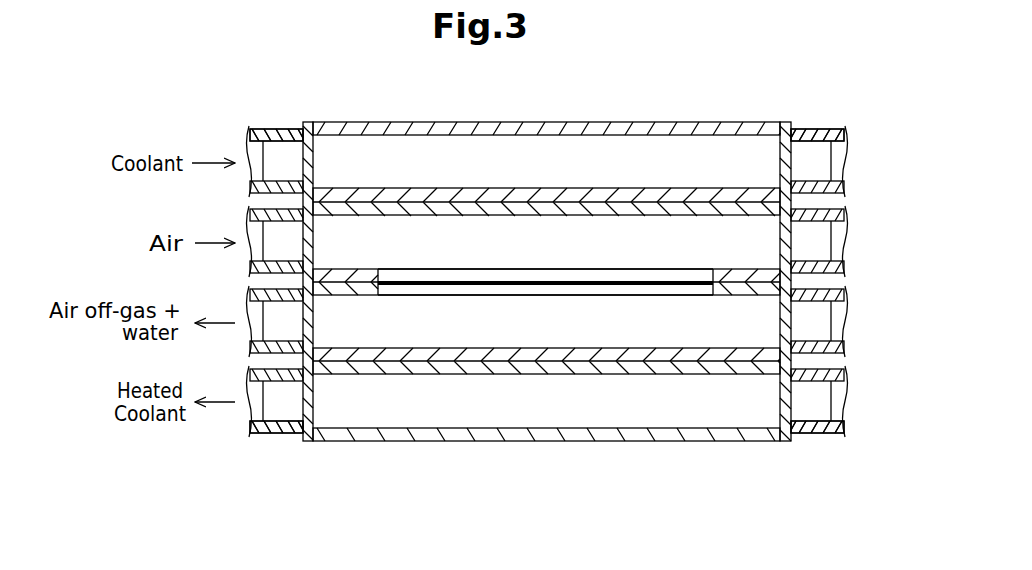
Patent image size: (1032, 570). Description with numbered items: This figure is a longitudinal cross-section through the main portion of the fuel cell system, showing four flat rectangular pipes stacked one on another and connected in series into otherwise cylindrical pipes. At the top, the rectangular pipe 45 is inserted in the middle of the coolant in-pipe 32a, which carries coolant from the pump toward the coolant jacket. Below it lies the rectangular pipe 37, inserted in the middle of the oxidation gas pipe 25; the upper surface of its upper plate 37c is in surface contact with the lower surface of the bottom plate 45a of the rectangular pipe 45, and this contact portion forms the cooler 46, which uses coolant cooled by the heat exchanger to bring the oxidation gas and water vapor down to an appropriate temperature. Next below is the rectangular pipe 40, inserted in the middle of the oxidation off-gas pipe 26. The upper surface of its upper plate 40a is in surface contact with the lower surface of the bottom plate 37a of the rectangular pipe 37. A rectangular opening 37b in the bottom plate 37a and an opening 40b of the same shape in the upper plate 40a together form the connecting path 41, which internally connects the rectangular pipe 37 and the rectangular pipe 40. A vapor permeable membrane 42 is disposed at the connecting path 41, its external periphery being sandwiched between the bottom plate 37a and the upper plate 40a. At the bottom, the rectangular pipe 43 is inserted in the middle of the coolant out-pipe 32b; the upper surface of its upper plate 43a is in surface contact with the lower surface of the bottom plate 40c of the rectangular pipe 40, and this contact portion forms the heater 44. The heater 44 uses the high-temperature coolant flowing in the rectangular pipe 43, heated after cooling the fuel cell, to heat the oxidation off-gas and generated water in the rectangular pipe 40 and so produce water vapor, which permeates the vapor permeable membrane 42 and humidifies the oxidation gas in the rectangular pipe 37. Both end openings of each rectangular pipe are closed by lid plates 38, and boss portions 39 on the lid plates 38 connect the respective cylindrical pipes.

The oxidation gas pipe 25 is at (254, 274).
The oxidation off-gas pipe 26 is at (254, 353).
The coolant in-pipe 32a is at (254, 193).
The coolant out-pipe 32b is at (254, 433).
The rectangular pipe 37 is at (546, 261).
The bottom plate 37a is at (745, 276).
The opening 37b is at (379, 276).
The upper plate 37c is at (470, 269).
The lid plate 38 is at (308, 122).
The boss portion 39 is at (280, 134).
The rectangular pipe 40 is at (566, 348).
The upper plate 40a is at (745, 348).
The opening 40b is at (382, 348).
The bottom plate 40c is at (499, 348).
The connecting path 41 is at (623, 270).
The vapor permeable membrane 42 is at (555, 281).
The rectangular pipe 43 is at (480, 441).
The upper plate 43a is at (582, 374).
The heater 44 is at (473, 379).
The rectangular pipe 45 is at (483, 122).
The bottom plate 45a is at (639, 189).
The cooler 46 is at (707, 187).